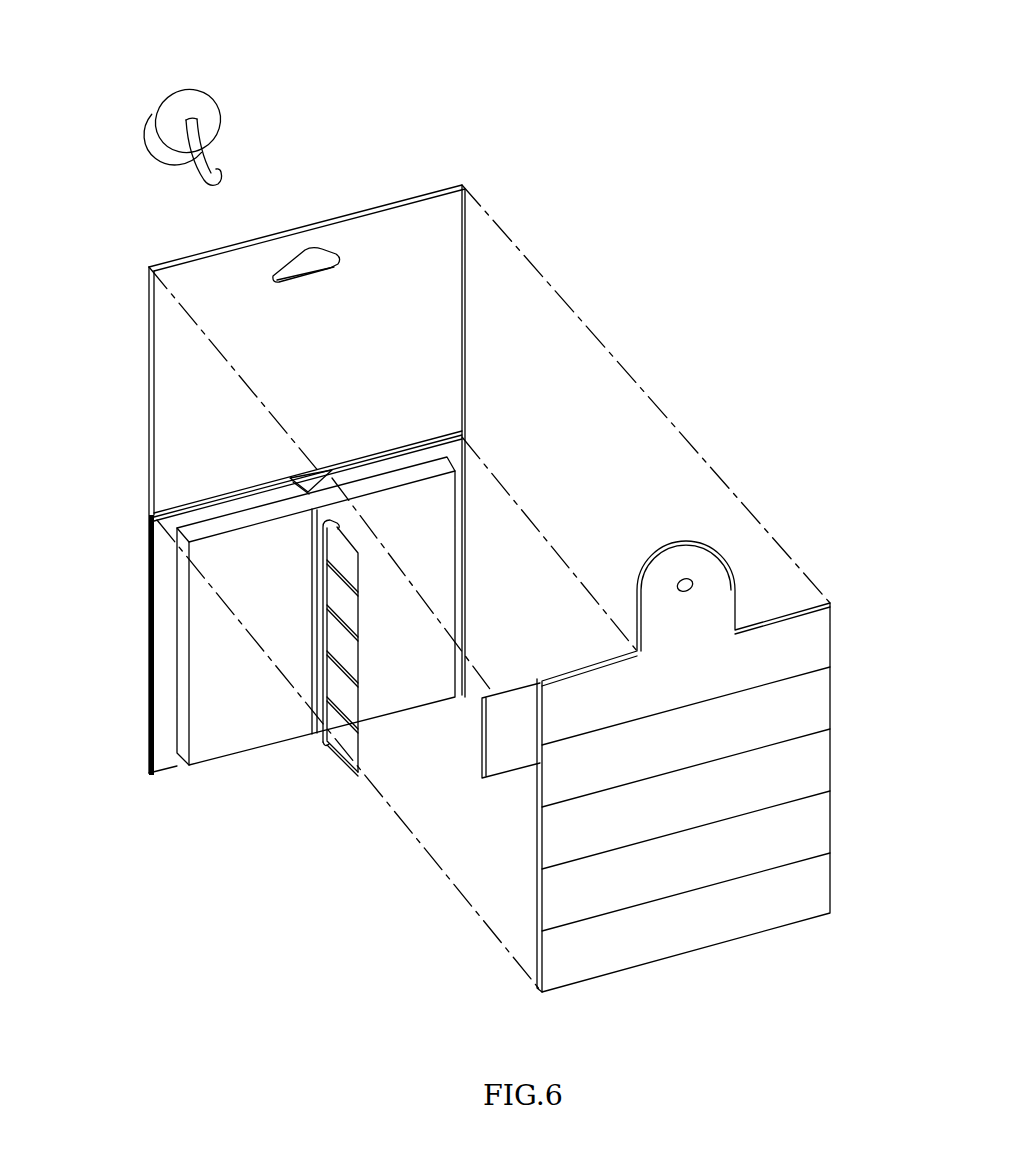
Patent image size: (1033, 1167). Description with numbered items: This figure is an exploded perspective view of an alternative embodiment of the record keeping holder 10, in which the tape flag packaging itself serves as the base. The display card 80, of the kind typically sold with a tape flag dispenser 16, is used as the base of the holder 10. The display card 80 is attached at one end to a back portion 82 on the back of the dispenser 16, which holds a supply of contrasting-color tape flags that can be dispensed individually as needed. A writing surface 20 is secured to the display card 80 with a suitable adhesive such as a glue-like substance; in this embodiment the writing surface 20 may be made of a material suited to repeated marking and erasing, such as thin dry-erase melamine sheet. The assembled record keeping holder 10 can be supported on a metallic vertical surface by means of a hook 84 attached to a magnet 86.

The record keeping holder 10 is at (410, 118).
The tape flag dispenser 16 is at (188, 727).
The writing surface 20 is at (836, 641).
The display card 80 is at (180, 410).
The back portion 82 is at (149, 645).
The hook 84 is at (207, 163).
The magnet 86 is at (200, 107).